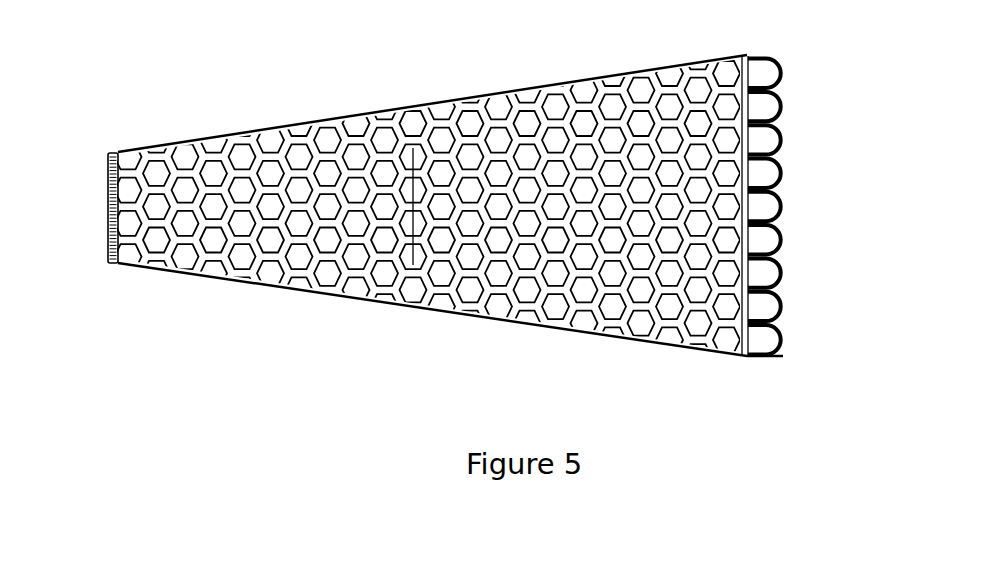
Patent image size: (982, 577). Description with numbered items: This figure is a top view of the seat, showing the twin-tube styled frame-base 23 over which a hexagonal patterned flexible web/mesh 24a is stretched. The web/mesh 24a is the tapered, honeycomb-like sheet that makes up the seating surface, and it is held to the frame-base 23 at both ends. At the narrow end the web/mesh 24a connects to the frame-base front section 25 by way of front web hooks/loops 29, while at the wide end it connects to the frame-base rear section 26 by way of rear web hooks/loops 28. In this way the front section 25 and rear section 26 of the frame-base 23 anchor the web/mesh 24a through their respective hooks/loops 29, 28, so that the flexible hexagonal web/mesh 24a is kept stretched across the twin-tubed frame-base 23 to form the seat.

The frame-base 23 is at (388, 148).
The flexible web/mesh 24a is at (440, 318).
The frame-base front section 25 is at (113, 207).
The front web hooks/loops 29 is at (110, 245).
The frame-base rear section 26 is at (795, 258).
The rear web hooks/loops 28 is at (783, 355).